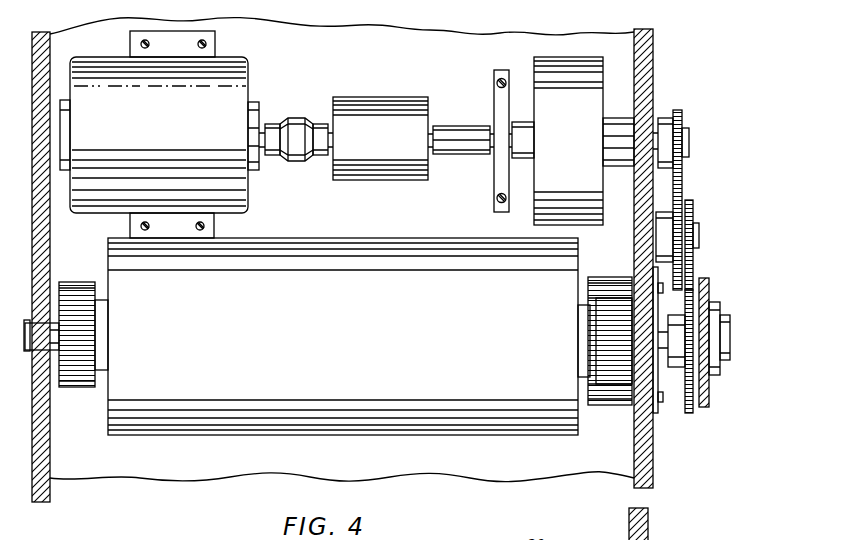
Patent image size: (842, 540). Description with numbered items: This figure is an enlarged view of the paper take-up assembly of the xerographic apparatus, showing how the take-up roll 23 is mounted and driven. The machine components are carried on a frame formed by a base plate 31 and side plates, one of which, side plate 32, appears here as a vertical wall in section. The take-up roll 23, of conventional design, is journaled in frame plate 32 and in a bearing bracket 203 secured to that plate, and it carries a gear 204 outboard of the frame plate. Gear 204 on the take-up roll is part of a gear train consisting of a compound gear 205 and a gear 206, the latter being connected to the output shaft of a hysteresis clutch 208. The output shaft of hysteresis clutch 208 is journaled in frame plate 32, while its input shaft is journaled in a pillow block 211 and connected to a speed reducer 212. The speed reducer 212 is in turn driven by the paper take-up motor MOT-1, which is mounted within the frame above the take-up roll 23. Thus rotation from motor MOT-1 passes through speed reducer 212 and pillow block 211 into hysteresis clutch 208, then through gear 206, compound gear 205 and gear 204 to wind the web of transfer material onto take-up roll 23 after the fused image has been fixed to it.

The take-up roll 23 is at (544, 430).
The base plate 31 is at (567, 474).
The side plate 32 is at (653, 35).
The paper take-up motor MOT-1 is at (250, 82).
The bearing bracket 203 is at (710, 396).
The gear 204 is at (690, 414).
The compound gear 205 is at (694, 206).
The gear 206 is at (677, 111).
The hysteresis clutch 208 is at (541, 78).
The pillow block 211 is at (494, 102).
The speed reducer 212 is at (375, 112).